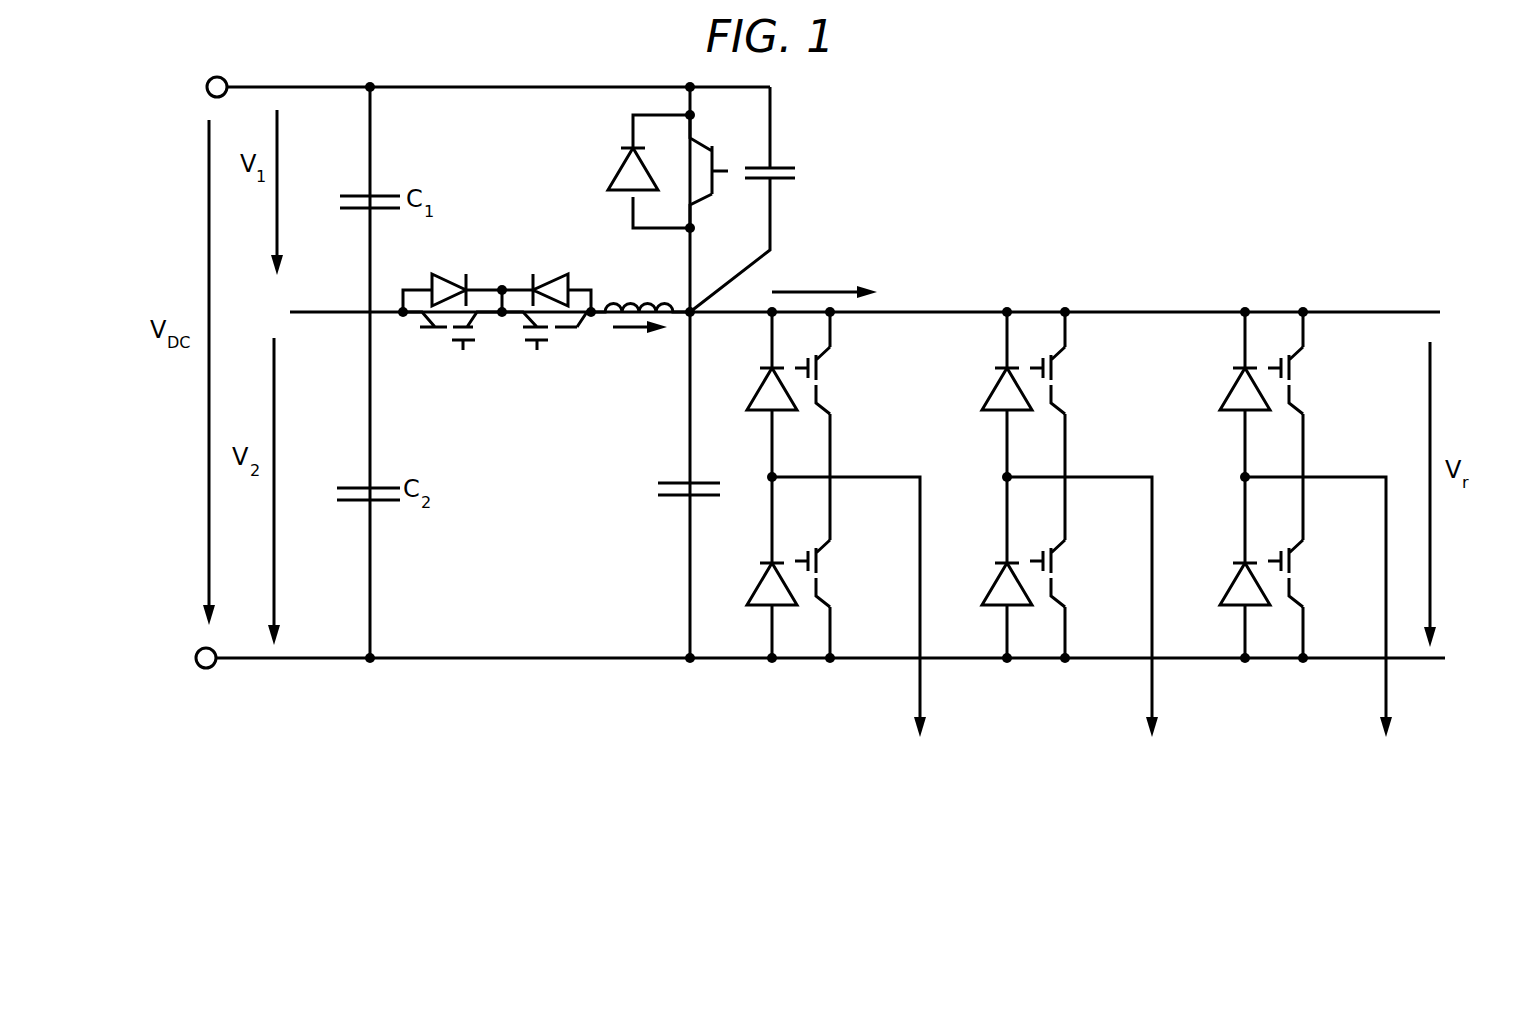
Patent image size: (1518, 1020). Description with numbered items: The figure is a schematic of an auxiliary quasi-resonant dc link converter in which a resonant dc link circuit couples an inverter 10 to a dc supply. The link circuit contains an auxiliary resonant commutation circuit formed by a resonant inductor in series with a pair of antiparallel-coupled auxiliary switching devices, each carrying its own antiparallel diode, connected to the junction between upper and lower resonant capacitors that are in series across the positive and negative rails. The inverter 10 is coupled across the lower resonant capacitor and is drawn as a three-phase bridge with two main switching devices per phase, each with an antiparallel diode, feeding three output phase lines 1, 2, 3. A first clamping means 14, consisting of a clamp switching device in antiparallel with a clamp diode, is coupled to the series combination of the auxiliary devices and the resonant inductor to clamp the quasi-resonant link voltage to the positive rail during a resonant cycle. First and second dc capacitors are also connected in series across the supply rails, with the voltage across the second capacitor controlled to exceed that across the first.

The inverter 10 is at (1142, 262).
The first clamping means 14 is at (848, 119).
The output phase 1 is at (858, 614).
The output phase 2 is at (1092, 616).
The output phase 3 is at (1328, 620).